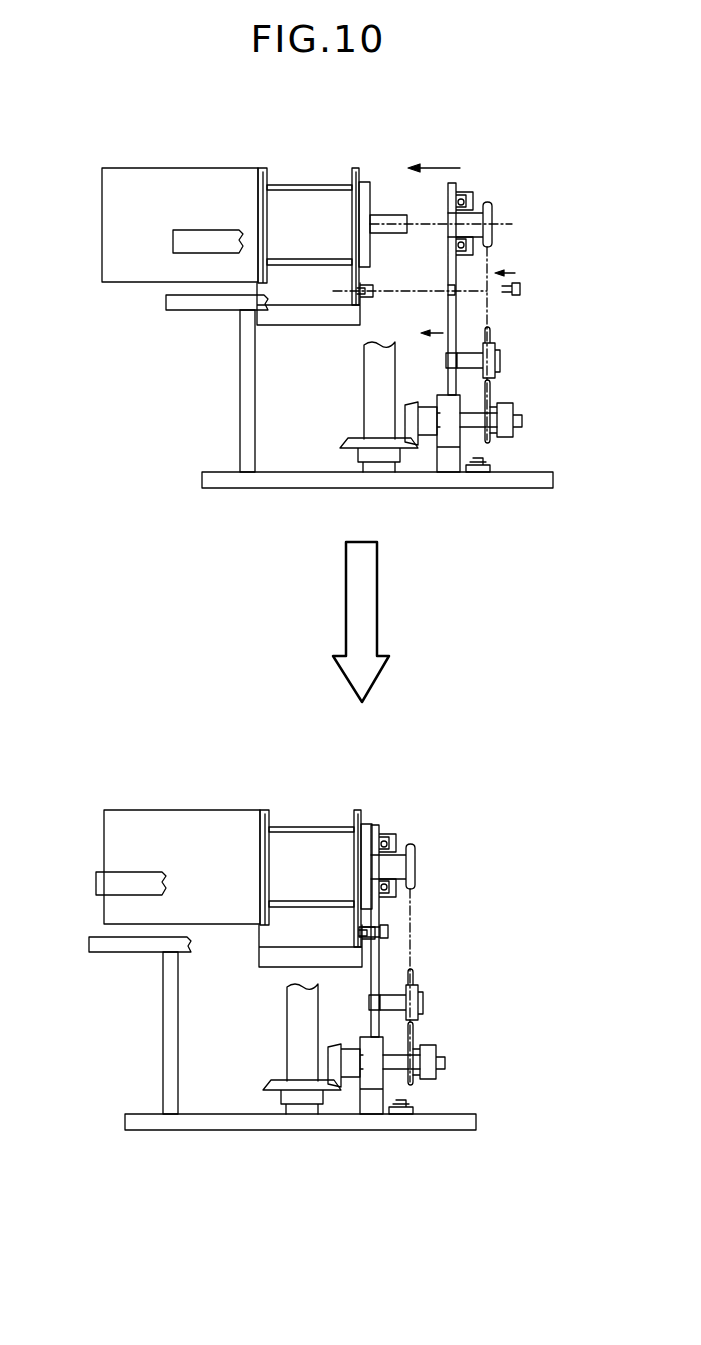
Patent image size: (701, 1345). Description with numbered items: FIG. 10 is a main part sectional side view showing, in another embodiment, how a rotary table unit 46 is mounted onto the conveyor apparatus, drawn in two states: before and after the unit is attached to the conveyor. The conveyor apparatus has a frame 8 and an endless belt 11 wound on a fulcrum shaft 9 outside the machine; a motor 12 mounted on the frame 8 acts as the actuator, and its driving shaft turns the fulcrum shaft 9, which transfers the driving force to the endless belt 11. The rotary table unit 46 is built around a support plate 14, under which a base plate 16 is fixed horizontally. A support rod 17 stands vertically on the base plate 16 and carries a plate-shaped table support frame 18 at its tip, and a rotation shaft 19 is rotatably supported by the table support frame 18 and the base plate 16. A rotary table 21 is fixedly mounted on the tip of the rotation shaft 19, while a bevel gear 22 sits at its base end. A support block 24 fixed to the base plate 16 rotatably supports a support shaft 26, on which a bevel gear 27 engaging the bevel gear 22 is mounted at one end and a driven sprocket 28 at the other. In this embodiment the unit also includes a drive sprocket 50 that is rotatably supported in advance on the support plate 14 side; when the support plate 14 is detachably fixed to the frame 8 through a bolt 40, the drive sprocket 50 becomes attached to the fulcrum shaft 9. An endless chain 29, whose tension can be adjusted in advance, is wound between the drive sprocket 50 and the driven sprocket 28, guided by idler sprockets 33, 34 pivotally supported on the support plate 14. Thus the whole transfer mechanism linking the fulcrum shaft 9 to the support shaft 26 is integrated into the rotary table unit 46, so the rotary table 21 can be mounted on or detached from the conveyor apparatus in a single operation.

The frame 8 is at (260, 178).
The fulcrum shaft 9 is at (335, 195).
The endless belt 11 is at (285, 185).
The motor 12 is at (175, 178).
The support plate 14 is at (448, 262).
The base plate 16 is at (283, 480).
The support rod 17 is at (245, 400).
The table support frame 18 is at (180, 310).
The rotation shaft 19 is at (375, 375).
The rotary table 21 is at (180, 237).
The bevel gear 22 is at (356, 442).
The support block 24 is at (447, 461).
The support shaft 26 is at (472, 422).
The bevel gear 27 is at (427, 413).
The driven sprocket 28 is at (500, 410).
The endless chain 29 is at (492, 260).
The idler sprocket 33 is at (487, 666).
The idler sprocket 34 is at (490, 333).
The bolt 40 is at (520, 282).
The rotary table unit 46 is at (192, 458).
The drive sprocket 50 is at (487, 200).